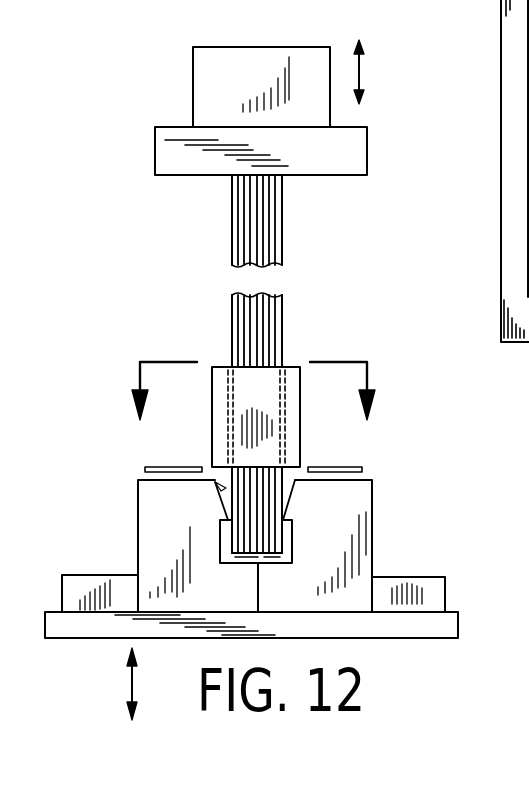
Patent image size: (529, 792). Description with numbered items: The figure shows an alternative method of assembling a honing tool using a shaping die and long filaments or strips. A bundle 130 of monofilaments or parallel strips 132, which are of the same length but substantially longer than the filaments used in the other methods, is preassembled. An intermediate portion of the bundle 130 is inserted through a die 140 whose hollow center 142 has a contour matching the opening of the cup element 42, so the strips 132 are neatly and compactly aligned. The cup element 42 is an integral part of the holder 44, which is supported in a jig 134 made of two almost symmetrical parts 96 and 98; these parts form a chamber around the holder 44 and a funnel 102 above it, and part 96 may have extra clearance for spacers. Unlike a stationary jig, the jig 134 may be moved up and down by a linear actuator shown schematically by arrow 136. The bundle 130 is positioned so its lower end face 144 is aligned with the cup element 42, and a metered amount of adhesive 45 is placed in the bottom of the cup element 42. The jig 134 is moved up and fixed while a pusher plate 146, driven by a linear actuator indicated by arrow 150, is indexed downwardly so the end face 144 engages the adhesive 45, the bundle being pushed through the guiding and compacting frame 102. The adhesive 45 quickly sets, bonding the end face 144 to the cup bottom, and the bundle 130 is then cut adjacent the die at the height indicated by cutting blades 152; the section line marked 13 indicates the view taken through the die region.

The pusher plate 146 is at (155, 148).
The arrow 150 is at (408, 69).
The bundle 130 is at (283, 240).
The strips 132 is at (282, 318).
The die 140 is at (212, 414).
The hollow center 142 is at (300, 400).
The section line 13- 13 is at (253, 397).
The cutting blades 152 is at (158, 467).
The part 96 is at (150, 538).
The part 98 is at (358, 492).
The funnel 102 is at (215, 483).
The cup element 42 is at (284, 516).
The holder 44 is at (220, 553).
The lower end face 144 is at (265, 553).
The adhesive 45 is at (262, 553).
The jig 134 is at (376, 546).
The arrow 136 is at (130, 673).